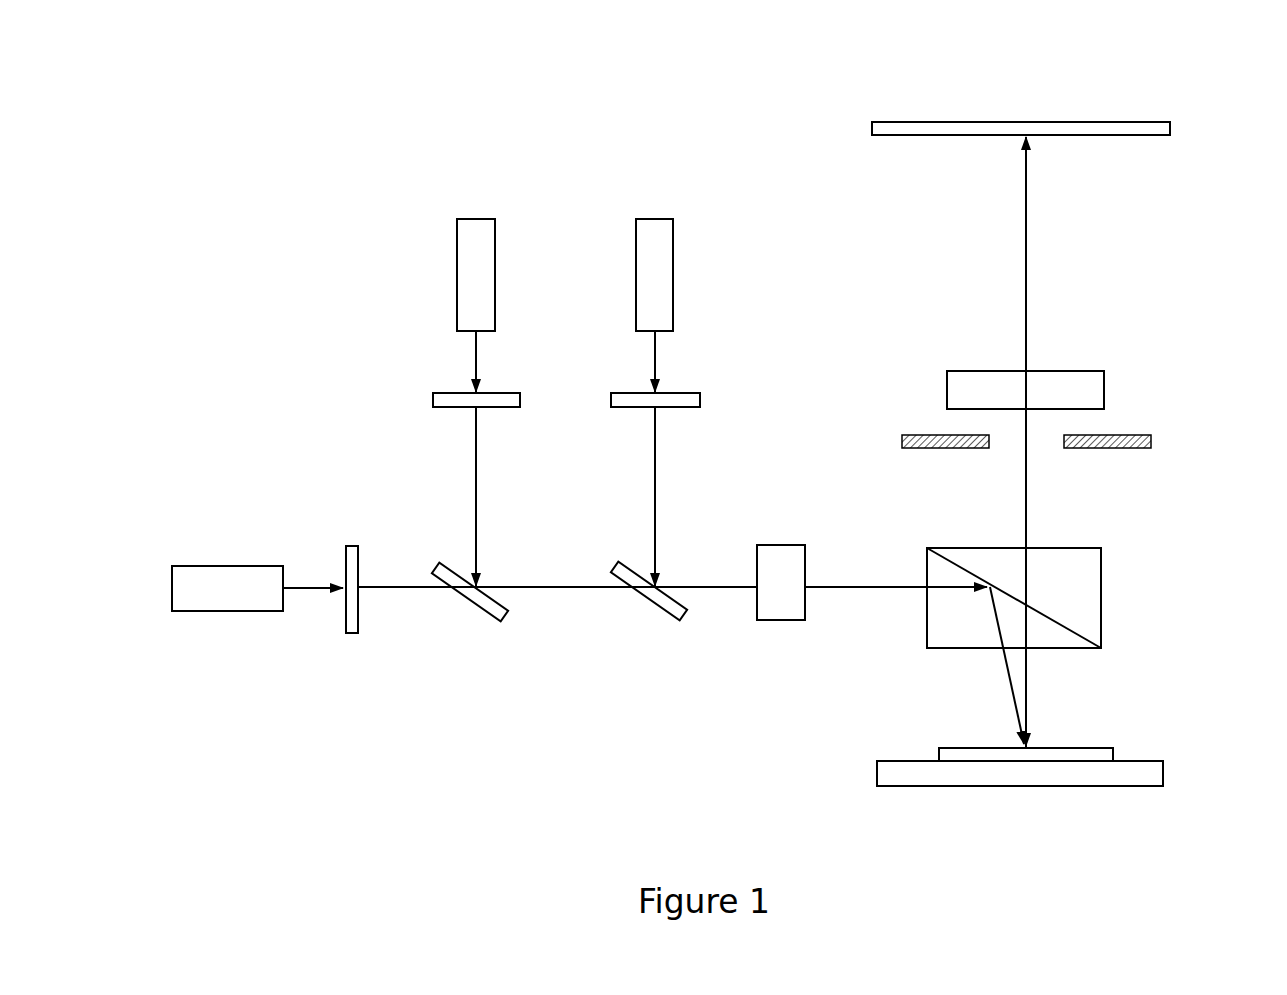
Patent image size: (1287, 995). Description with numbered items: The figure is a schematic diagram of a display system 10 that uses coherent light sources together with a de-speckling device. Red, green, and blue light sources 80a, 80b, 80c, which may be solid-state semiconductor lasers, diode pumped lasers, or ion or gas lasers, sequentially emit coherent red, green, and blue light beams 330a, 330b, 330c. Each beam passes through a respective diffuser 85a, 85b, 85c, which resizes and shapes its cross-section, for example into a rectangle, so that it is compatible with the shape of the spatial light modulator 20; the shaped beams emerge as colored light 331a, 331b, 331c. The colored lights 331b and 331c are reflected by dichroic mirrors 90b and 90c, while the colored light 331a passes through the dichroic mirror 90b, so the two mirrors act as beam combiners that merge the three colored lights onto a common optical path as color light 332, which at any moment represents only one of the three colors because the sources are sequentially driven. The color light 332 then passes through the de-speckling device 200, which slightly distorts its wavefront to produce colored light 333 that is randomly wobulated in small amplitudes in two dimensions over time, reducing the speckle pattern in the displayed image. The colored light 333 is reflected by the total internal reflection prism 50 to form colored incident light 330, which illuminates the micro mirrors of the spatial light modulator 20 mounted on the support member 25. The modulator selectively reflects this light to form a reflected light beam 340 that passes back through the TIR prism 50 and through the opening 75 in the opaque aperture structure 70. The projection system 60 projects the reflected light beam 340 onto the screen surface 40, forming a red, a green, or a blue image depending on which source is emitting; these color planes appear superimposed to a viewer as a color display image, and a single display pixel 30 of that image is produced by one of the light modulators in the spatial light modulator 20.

The display system 10 is at (318, 170).
The spatial light modulator 20 is at (1097, 745).
The support member 25 is at (1143, 772).
The display pixel 30 is at (1034, 140).
The screen surface 40 is at (1128, 127).
The total internal reflection (TIR) prism 50 is at (1085, 593).
The projection system 60 is at (975, 385).
The opaque aperture structure 70 is at (906, 433).
The opening 75 is at (1057, 462).
The red light source 80a is at (197, 580).
The green light source 80b is at (476, 263).
The blue light source 80c is at (659, 263).
The diffuser 85a is at (353, 622).
The diffuser 85b is at (467, 404).
The diffuser 85c is at (637, 402).
The dichroic mirror 90b is at (438, 565).
The dichroic mirror 90c is at (616, 565).
The de-speckling device 200 is at (780, 608).
The colored incident light 330 is at (1015, 704).
The coherent red light beam 330a is at (321, 582).
The coherent green light beam 330b is at (472, 359).
The coherent blue light beam 330c is at (651, 352).
The colored light 331a is at (421, 589).
The colored light 331b is at (472, 471).
The colored light 331c is at (651, 470).
The color light 332 is at (735, 590).
The colored light 333 is at (882, 590).
The reflected light beam 340 is at (1021, 514).